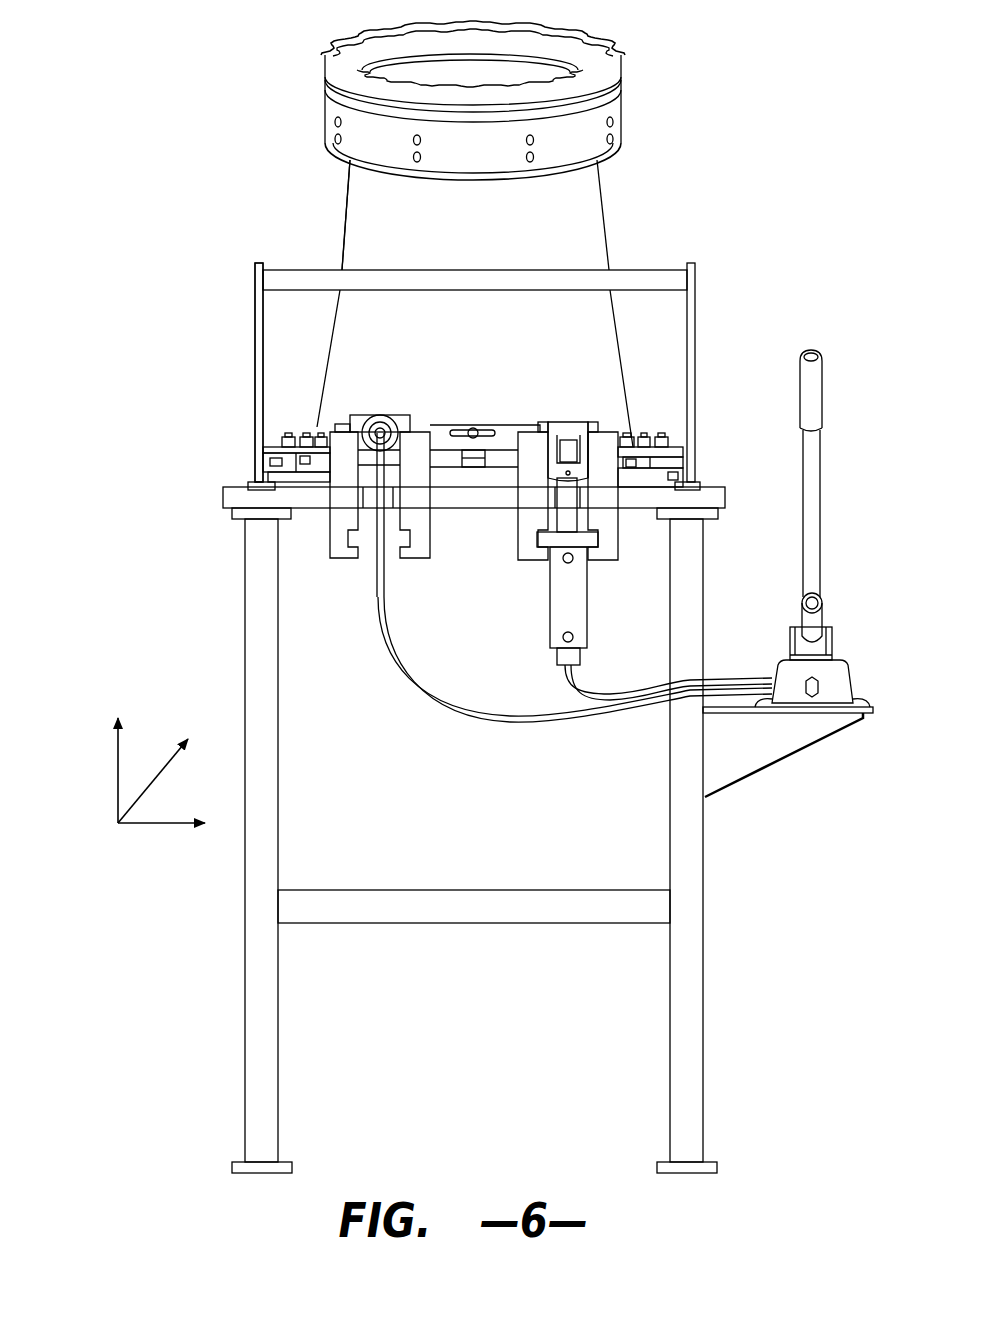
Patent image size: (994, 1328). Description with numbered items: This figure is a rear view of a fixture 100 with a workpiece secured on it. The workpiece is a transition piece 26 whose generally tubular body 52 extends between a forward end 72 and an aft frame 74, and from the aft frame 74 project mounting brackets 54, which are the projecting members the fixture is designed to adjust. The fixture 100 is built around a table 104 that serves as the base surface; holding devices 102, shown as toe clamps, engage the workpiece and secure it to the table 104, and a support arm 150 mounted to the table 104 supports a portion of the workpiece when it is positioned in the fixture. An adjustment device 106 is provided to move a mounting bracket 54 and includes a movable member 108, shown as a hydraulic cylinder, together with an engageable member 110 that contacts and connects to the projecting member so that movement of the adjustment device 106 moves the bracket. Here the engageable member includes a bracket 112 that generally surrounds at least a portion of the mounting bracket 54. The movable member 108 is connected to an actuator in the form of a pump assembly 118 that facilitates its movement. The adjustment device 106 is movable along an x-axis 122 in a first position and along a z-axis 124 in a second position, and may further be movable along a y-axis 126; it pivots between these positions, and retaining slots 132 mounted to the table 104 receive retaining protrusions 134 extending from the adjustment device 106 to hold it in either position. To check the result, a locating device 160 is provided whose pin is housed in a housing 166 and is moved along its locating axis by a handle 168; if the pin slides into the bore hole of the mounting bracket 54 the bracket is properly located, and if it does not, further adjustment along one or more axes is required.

The forward end 72 is at (645, 104).
The tubular body 52 is at (575, 205).
The transition piece 26 is at (622, 245).
The fixture 100 is at (202, 304).
The support arm 150 is at (703, 300).
The table 104 is at (235, 497).
The holding device 102 is at (678, 445).
The retaining slots 132 is at (362, 540).
The adjustment device 106 is at (378, 408).
The aft frame 74 is at (325, 470).
The housing 166 is at (455, 430).
The handle 168 is at (473, 433).
The locating device 160 is at (505, 412).
The engageable member 110 is at (545, 412).
The mounting bracket 54 is at (567, 420).
The bracket 112 is at (590, 428).
The retaining protrusion 134 is at (535, 537).
The movable member 108 is at (580, 588).
The pump assembly 118 is at (834, 487).
The z-axis 124 is at (118, 760).
The x-axis 122 is at (158, 768).
The y-axis 126 is at (160, 823).